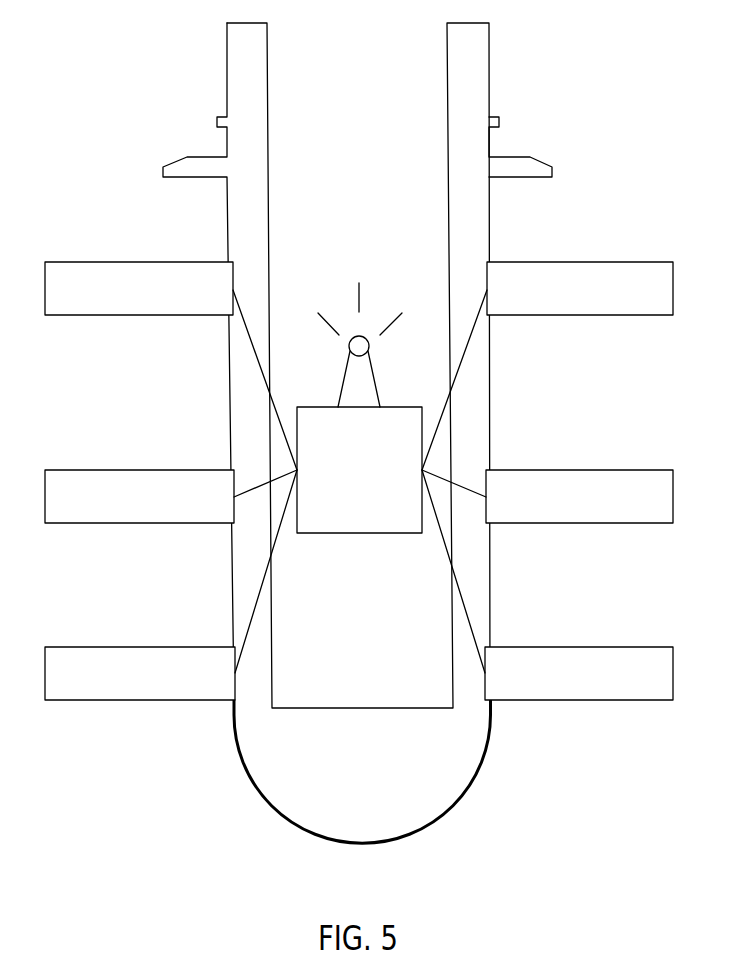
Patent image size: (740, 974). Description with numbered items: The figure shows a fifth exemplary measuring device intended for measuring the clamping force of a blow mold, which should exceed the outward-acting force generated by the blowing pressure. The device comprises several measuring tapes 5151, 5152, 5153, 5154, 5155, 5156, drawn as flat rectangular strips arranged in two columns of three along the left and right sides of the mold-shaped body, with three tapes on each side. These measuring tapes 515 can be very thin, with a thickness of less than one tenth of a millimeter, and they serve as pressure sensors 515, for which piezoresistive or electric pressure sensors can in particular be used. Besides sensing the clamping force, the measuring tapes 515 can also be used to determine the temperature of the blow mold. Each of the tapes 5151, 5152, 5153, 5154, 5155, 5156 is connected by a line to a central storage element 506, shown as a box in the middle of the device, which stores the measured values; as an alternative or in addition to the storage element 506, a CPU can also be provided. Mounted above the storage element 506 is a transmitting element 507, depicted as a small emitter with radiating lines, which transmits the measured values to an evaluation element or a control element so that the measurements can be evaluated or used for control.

The storage element 506 is at (343, 482).
The transmitting element 507 is at (367, 328).
The pressure sensors 515 is at (359, 458).
The measuring tape 5151 is at (612, 272).
The measuring tape 5152 is at (612, 481).
The measuring tape 5153 is at (612, 657).
The measuring tape 5154 is at (102, 657).
The measuring tape 5155 is at (102, 481).
The measuring tape 5156 is at (102, 272).